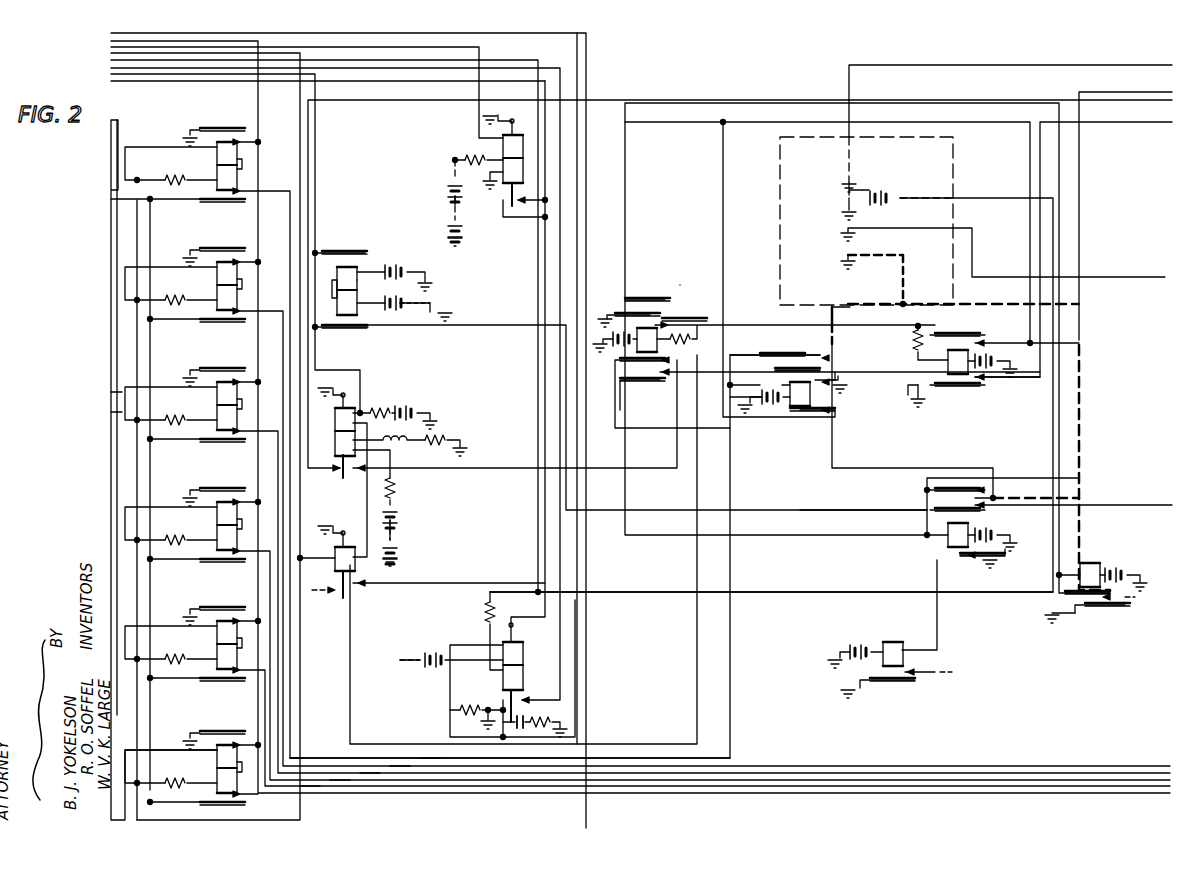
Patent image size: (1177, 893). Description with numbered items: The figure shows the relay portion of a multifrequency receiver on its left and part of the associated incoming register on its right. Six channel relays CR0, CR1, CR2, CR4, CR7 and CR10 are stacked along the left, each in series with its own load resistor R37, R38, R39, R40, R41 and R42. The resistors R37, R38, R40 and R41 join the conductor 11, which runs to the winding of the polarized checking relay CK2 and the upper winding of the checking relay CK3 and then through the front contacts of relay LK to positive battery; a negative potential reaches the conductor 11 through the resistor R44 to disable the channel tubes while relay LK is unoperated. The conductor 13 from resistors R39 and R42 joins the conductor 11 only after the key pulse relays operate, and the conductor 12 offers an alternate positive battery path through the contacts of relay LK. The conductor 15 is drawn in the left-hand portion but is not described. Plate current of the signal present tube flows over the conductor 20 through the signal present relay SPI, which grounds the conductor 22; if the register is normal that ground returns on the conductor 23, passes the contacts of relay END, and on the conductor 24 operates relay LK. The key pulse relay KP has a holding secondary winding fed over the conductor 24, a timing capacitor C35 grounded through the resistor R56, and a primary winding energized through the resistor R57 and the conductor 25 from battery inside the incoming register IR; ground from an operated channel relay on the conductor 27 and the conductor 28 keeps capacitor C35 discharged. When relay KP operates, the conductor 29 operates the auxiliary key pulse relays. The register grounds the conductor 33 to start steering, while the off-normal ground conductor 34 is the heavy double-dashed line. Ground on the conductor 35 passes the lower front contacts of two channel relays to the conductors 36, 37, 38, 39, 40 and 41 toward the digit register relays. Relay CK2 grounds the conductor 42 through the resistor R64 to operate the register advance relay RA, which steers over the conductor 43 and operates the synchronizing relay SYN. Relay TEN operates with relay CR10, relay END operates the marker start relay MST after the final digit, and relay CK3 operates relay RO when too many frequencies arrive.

The conductor 11 is at (158, 55).
The conductor 12 is at (127, 81).
The conductor 13 is at (118, 122).
The conductor 15 is at (125, 472).
The conductor 20 is at (480, 120).
The conductor 22 is at (605, 125).
The conductor 23 is at (1088, 505).
The conductor 24 is at (542, 243).
The conductor 25 is at (194, 62).
The conductor 27 is at (258, 105).
The conductor 28 is at (500, 40).
The conductor 29 is at (227, 70).
The conductor 33 is at (1058, 65).
The off-normal ground conductor 34 is at (1000, 313).
The conductor 35 is at (133, 200).
The conductor 36 is at (299, 793).
The conductor 37 is at (330, 786).
The conductor 38 is at (357, 780).
The conductor 39 is at (382, 773).
The conductor 40 is at (404, 766).
The conductor 41 is at (428, 759).
The conductor 42 is at (697, 655).
The conductor 43 is at (1110, 94).
The channel relay CR10 is at (227, 183).
The channel relay CR7 is at (225, 266).
The channel relay CR4 is at (227, 386).
The channel relay CR2 is at (227, 504).
The channel relay CR1 is at (227, 627).
The channel relay CR0 is at (227, 748).
The load resistor R42 is at (173, 180).
The load resistor R41 is at (175, 300).
The load resistor R40 is at (178, 419).
The load resistor R39 is at (178, 539).
The load resistor R38 is at (178, 659).
The load resistor R37 is at (178, 780).
The signal present relay SPI is at (500, 143).
The relay LK is at (346, 267).
The polarized checking relay CK3 is at (350, 405).
The polarized checking relay CK2 is at (350, 545).
The resistor R44 is at (378, 408).
The key pulse relay KP is at (520, 652).
The resistor R57 is at (482, 616).
The resistor R56 is at (550, 718).
The timing capacitor C35 is at (520, 710).
The register advance relay RA is at (645, 328).
The resistor R64 is at (675, 337).
The relay TEN is at (798, 410).
The incoming register IR is at (958, 163).
The synchronizing relay SYN is at (958, 372).
The relay END is at (957, 548).
The marker start relay MST is at (891, 642).
The relay RO is at (1093, 590).